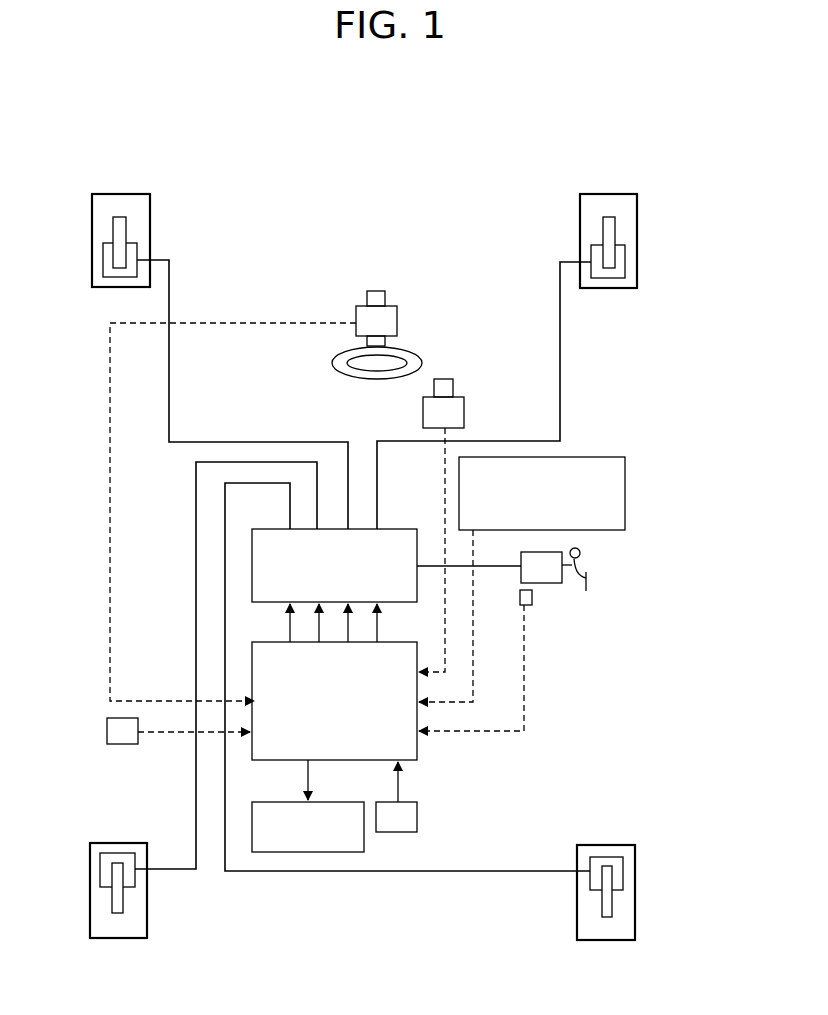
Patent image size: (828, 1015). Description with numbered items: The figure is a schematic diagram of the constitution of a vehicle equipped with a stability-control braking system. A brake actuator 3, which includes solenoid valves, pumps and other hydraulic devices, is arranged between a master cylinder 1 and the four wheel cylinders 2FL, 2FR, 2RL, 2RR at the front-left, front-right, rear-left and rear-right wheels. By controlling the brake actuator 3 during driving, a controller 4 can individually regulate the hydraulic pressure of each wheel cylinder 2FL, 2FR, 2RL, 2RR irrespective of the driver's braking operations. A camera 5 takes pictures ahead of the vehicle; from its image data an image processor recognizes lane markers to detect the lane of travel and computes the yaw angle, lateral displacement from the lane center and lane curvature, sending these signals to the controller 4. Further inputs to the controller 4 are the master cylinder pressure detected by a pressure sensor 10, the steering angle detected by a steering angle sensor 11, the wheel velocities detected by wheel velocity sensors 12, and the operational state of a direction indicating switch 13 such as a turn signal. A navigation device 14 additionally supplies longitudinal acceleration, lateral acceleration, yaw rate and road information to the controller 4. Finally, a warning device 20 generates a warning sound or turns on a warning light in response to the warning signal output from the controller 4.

The master cylinder 1 is at (540, 583).
The wheel cylinder 2FL is at (137, 244).
The wheel cylinder 2FR is at (624, 246).
The wheel cylinder 2RL is at (136, 882).
The wheel cylinder 2RR is at (624, 886).
The brake actuator 3 is at (401, 529).
The controller 4 is at (417, 748).
The camera 5 is at (464, 413).
The pressure sensor 10 is at (520, 597).
The steering angle sensor 11 is at (397, 320).
The wheel velocity sensors 12 is at (418, 817).
The direction indicating switch 13 is at (107, 732).
The navigation device 14 is at (625, 497).
The warning device 20 is at (330, 802).